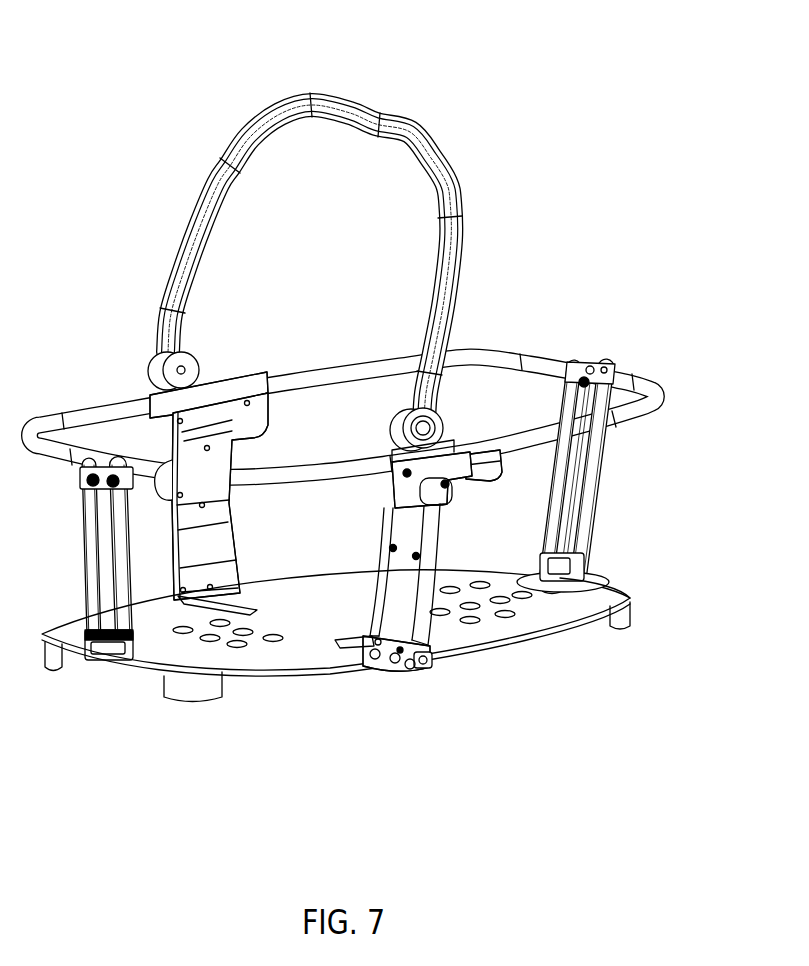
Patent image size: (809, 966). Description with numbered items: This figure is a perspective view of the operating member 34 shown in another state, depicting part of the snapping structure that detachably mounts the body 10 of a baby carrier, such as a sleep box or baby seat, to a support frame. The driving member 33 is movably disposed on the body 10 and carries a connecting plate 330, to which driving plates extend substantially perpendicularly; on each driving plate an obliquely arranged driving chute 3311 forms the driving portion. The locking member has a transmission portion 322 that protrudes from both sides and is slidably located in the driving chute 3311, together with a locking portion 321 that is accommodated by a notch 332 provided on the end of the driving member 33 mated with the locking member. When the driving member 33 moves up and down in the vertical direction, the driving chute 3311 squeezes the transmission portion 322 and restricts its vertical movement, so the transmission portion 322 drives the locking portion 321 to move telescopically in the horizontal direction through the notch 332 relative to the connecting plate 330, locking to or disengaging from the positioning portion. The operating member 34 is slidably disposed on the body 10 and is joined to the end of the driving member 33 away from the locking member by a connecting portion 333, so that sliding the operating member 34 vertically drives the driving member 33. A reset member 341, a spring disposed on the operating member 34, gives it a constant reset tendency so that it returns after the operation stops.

The body 10 is at (135, 45).
The driving member 33 is at (437, 560).
The operating member 34 is at (550, 527).
The locking portion 321 is at (432, 664).
The transmission portion 322 is at (415, 668).
The connecting plate 330 is at (365, 648).
The notch 332 is at (432, 656).
The connecting portion 333 is at (622, 600).
The reset member 341 is at (462, 462).
The driving chute 3311 is at (406, 662).